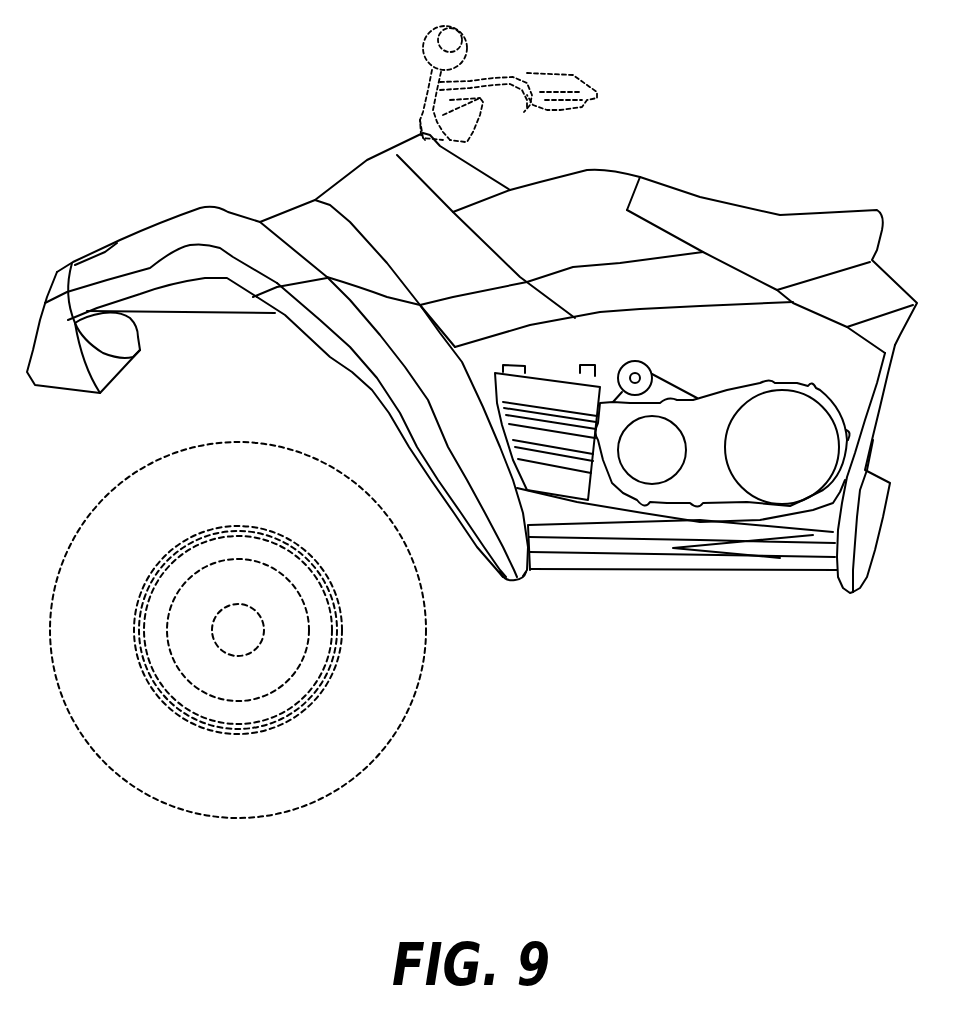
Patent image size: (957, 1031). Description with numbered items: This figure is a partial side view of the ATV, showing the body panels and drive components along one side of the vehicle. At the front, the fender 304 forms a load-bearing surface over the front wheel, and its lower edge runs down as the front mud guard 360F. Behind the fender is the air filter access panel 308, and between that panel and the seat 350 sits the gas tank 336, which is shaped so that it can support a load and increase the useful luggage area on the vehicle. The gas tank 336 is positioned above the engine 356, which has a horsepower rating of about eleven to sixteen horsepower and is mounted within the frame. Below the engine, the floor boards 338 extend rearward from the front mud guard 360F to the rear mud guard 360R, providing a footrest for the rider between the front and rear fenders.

The front fender 304 is at (195, 227).
The air filter access panel 308 is at (363, 162).
The gas tank 336 is at (593, 210).
The seat 350 is at (720, 210).
The engine 356 is at (780, 417).
The rear mud guard 360R is at (850, 420).
The front mud guard 360F is at (437, 392).
The floor boards 338 is at (637, 549).